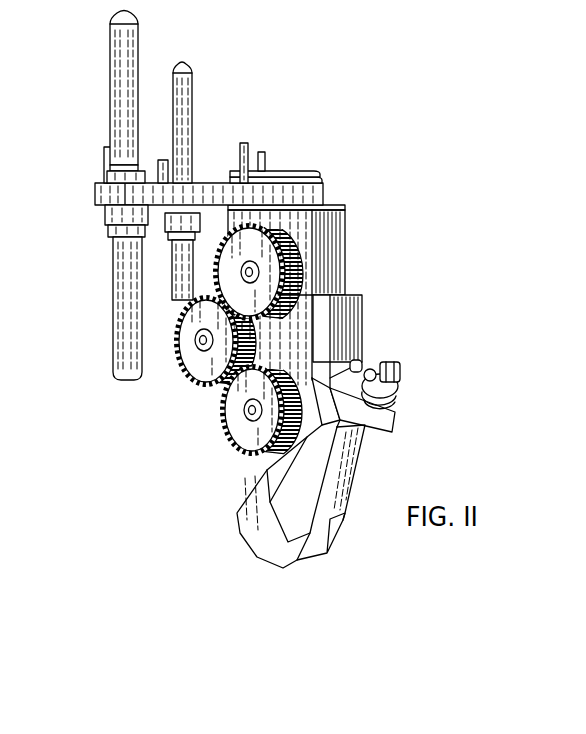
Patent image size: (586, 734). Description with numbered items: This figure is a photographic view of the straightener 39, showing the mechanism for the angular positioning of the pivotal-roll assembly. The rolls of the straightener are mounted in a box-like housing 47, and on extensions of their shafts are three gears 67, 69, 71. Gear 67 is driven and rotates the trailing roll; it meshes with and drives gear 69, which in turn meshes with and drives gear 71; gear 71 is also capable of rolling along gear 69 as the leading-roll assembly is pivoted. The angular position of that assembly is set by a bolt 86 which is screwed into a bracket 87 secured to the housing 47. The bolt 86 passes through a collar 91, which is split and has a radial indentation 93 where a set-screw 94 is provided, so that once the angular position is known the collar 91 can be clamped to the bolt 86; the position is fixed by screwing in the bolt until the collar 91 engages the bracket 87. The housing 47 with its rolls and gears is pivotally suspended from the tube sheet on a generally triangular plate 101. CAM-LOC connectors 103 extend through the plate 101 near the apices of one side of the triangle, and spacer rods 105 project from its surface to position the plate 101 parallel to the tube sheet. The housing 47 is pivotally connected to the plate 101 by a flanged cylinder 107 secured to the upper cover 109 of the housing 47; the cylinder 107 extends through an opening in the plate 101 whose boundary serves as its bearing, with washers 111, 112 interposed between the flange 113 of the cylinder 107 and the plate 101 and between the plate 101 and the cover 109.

The straightener 39 is at (175, 404).
The housing 47 is at (324, 280).
The gear 67 is at (304, 264).
The gear 69 is at (186, 342).
The gear 71 is at (243, 454).
The bolt 86 is at (396, 366).
The bracket 87 is at (346, 323).
The collar 91 is at (396, 405).
The radial indentation 93 is at (398, 384).
The set-screw 94 is at (360, 362).
The triangular plate 101 is at (204, 182).
The CAM-LOC connectors 103 is at (110, 40).
The spacer rods 105 is at (105, 150).
The flanged cylinder 107 is at (281, 168).
The upper cover 109 is at (347, 216).
The washer 111 is at (298, 179).
The washer 112 is at (306, 208).
The flange 113 is at (292, 171).